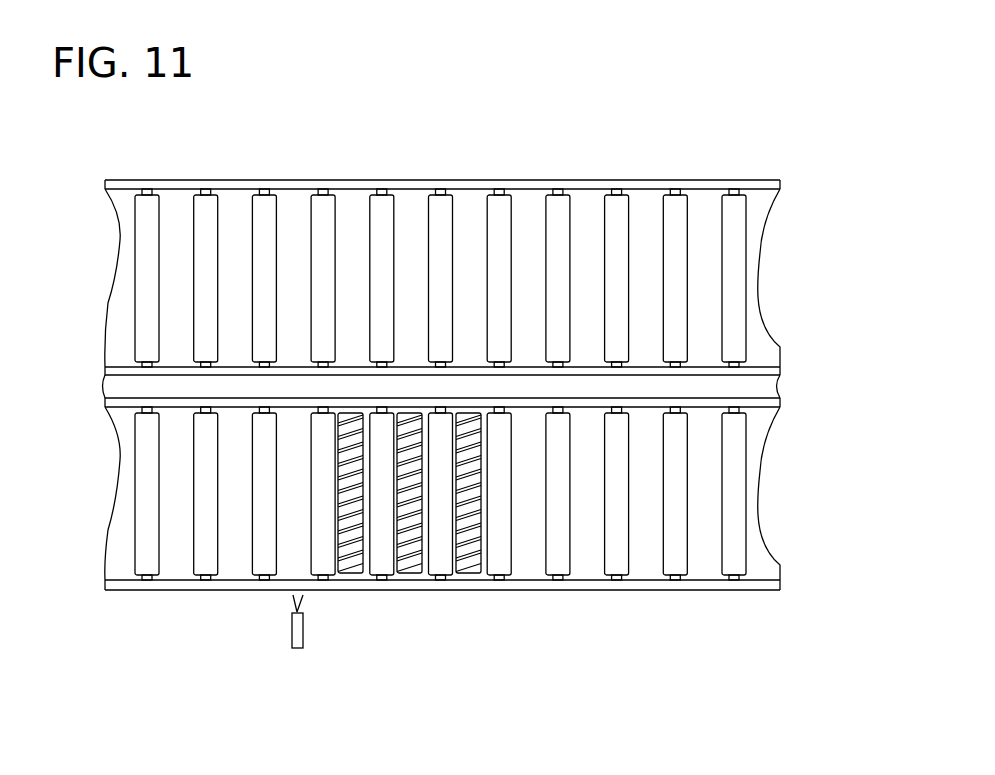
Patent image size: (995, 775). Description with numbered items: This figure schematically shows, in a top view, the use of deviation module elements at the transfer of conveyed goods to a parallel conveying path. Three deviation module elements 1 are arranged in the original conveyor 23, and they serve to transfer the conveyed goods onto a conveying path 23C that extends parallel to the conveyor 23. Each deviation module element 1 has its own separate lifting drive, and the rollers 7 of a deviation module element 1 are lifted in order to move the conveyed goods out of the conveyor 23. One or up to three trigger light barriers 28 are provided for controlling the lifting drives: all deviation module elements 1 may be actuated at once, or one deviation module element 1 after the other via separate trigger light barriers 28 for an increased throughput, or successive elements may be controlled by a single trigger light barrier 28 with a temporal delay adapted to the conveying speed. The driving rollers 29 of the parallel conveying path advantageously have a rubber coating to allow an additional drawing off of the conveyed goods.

The deviation module element 1 is at (353, 568).
The rollers 7 is at (473, 490).
The conveyor 23 is at (193, 593).
The conveying path 23C is at (585, 175).
The trigger light barrier 28 is at (298, 635).
The driving rollers 29 is at (327, 230).